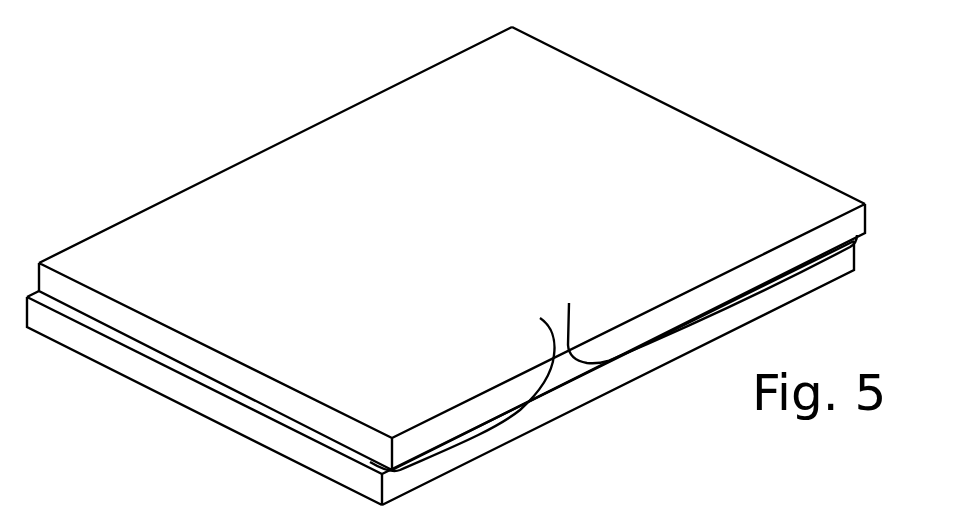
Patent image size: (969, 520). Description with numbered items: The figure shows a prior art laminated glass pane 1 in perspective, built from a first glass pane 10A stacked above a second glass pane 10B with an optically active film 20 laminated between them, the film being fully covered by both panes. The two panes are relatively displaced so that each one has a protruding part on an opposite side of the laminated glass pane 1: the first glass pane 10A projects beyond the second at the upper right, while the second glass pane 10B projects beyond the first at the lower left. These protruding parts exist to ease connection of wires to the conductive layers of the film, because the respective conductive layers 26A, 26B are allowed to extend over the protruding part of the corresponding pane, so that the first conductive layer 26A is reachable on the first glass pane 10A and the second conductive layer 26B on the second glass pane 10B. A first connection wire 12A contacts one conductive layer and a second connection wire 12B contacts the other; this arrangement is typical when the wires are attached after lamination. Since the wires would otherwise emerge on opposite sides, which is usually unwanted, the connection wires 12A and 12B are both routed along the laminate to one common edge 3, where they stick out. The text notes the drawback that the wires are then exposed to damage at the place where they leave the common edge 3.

The laminated glass pane 1 is at (156, 91).
The first glass pane 10A is at (554, 80).
The second glass pane 10B is at (152, 378).
The first connection wire 12A is at (569, 332).
The second connection wire 12B is at (540, 318).
The optically active film 20 is at (240, 403).
The first conductive layer 26A is at (847, 163).
The second conductive layer 26B is at (87, 322).
The common edge 3 is at (587, 388).